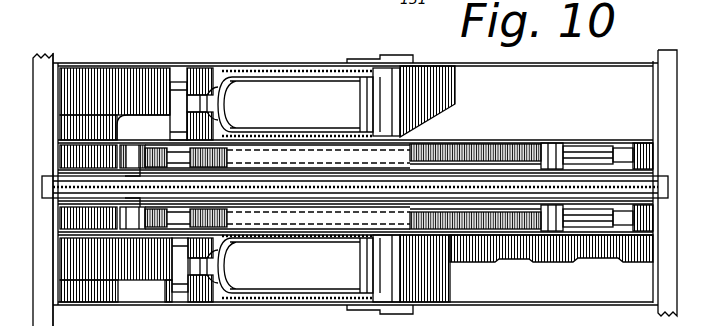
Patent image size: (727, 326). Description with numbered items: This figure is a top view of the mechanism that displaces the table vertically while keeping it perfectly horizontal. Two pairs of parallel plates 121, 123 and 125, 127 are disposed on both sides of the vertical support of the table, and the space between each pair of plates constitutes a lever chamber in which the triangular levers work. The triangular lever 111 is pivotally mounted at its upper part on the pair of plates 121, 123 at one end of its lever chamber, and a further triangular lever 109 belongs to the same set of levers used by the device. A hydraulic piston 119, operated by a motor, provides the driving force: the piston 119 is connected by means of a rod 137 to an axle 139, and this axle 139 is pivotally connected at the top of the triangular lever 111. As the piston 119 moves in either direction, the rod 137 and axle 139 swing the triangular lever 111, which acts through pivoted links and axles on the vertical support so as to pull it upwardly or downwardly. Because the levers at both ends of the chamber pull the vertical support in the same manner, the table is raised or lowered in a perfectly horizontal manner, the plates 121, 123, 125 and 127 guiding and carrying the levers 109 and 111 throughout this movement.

The triangular lever 109 is at (163, 217).
The triangular lever 111 is at (160, 157).
The hydraulic piston 119 is at (322, 98).
The plate 121 is at (590, 165).
The plate 123 is at (522, 143).
The plate 125 is at (528, 225).
The plate 127 is at (597, 229).
The rod 137 is at (208, 100).
The axle 139 is at (182, 80).